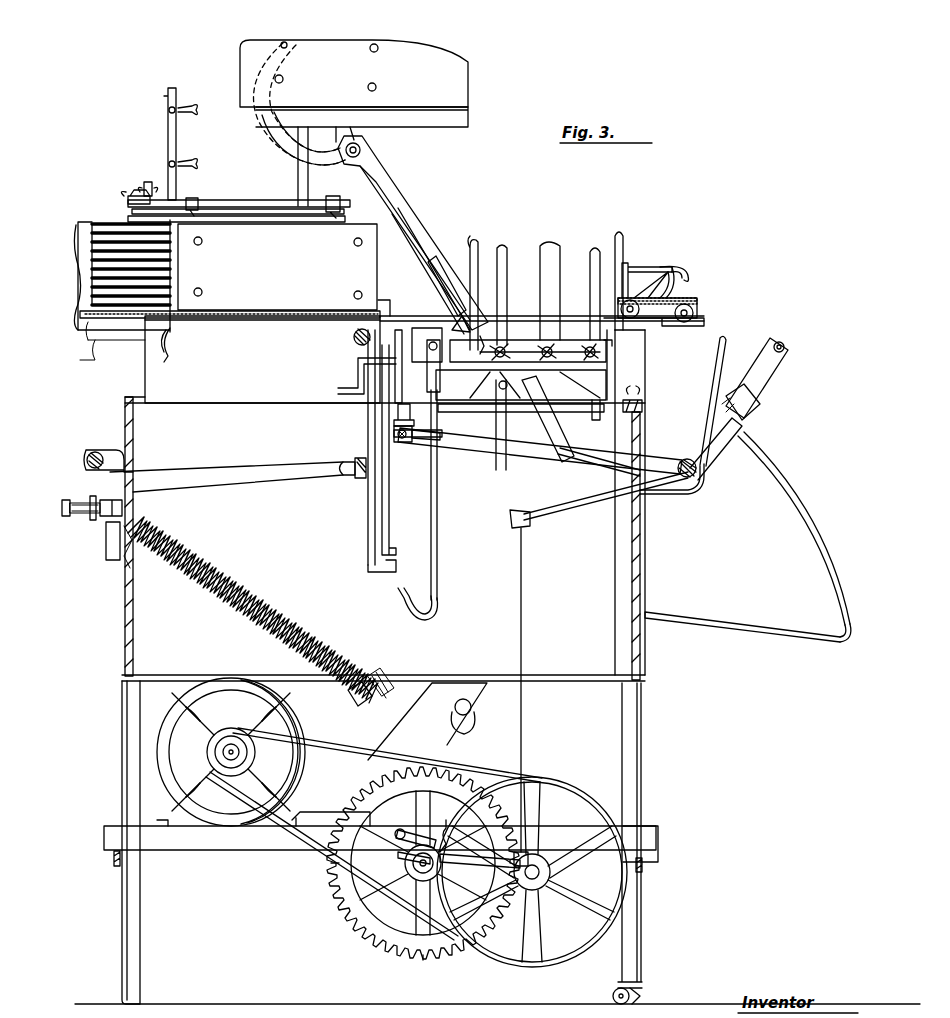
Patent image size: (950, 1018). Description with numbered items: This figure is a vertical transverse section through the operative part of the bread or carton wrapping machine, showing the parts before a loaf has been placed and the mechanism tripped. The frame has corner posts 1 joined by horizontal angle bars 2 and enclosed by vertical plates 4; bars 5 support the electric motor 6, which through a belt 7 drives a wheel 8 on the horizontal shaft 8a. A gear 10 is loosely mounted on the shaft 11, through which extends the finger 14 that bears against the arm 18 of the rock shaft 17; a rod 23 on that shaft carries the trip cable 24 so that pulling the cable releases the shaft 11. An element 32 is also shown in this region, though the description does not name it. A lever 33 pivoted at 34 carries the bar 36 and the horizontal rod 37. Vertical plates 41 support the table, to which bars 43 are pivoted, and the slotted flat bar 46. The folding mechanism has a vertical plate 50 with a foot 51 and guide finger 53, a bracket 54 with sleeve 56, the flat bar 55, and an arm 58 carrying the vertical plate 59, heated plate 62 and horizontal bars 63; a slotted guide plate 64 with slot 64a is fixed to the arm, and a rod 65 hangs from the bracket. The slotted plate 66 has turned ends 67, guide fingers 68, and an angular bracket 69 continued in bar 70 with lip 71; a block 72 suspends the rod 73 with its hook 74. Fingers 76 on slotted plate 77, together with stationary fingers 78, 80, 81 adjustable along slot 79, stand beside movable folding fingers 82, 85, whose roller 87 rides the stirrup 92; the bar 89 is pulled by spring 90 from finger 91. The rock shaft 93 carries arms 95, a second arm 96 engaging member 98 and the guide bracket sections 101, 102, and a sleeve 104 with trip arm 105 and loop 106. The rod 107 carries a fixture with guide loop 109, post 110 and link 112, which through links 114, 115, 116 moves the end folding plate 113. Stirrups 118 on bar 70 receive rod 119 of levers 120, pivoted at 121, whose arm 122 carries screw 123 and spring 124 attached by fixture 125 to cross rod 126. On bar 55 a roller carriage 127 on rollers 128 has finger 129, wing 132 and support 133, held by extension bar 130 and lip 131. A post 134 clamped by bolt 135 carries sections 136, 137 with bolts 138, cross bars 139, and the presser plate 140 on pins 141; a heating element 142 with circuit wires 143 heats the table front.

The corner post 1 is at (128, 770).
The horizontal angle bar 2 is at (124, 400).
The vertical plate 4 is at (134, 468).
The bar 5 is at (282, 850).
The electric motor 6 is at (290, 726).
The belt 7 is at (368, 716).
The wheel 8 is at (522, 964).
The horizontal shaft 8a is at (557, 877).
The gear 10 is at (372, 942).
The horizontal shaft 11 is at (412, 866).
The finger 14 is at (458, 858).
The rock shaft 17 is at (396, 838).
The arm 18 is at (398, 858).
The rod 23 is at (446, 830).
The trip cable 24 is at (522, 624).
The gear rim 32 is at (346, 802).
The lever 33 is at (458, 734).
The pivot 34 is at (472, 710).
The bar 36 is at (768, 364).
The horizontal rod 37 is at (786, 346).
The vertical plate 41 is at (268, 402).
The bar 43 is at (126, 334).
The flat bar 46 is at (128, 194).
The vertical plate 50 is at (646, 362).
The foot 51 is at (644, 400).
The guide finger 53 is at (616, 462).
The bracket 54 is at (378, 296).
The flat horizontal bar 55 is at (518, 340).
The sleeve 56 is at (354, 336).
The arm 58 is at (292, 245).
The vertical plate 59 is at (86, 228).
The heated plate 62 is at (312, 308).
The horizontal bar 63 is at (114, 250).
The guide plate 64 is at (446, 260).
The longitudinal slot 64a is at (424, 248).
The rod 65 is at (386, 516).
The plate 66 is at (566, 340).
The inwardly turned end 67 is at (412, 330).
The guide finger 68 is at (608, 350).
The angular bracket 69 is at (360, 382).
The bar 70 is at (366, 504).
The lip 71 is at (374, 566).
The block 72 is at (430, 350).
The rod 73 is at (438, 496).
The hook 74 is at (414, 604).
The vertical finger 76 is at (478, 246).
The slotted plate 77 is at (484, 338).
The vertical finger 78 is at (502, 246).
The slot 79 is at (548, 374).
The vertical finger 80 is at (596, 246).
The vertical finger 81 is at (550, 246).
The movable folding finger 82 is at (442, 286).
The folding finger 85 is at (690, 262).
The roller 87 is at (596, 408).
The bar 89 is at (526, 402).
The coiled tension spring 90 is at (448, 400).
The finger 91 is at (412, 414).
The U-shaped stirrup 92 is at (560, 402).
The rock shaft 93 is at (686, 480).
The arm 95 is at (360, 346).
The second arm 96 is at (714, 452).
The member 98 is at (750, 410).
The arc shaped section 101 is at (802, 526).
The section 102 is at (712, 626).
The sleeve 104 is at (682, 460).
The arm 105 is at (606, 506).
The loop 106 is at (712, 370).
The horizontal rod 107 is at (408, 444).
The guide loop 109 is at (444, 440).
The post 110 is at (400, 406).
The link 112 is at (396, 186).
The end folding plate 113 is at (338, 46).
The link 114 is at (294, 190).
The link 115 is at (372, 134).
The link 116 is at (282, 145).
The stirrup 118 is at (338, 476).
The horizontal rod 119 is at (356, 460).
The lever 120 is at (244, 478).
The pivot 121 is at (92, 452).
The arm 122 is at (104, 534).
The adjusting screw 123 is at (128, 510).
The spring 124 is at (244, 604).
The connecting fixture 125 is at (388, 694).
The cross rod 126 is at (358, 700).
The roller carriage 127 is at (692, 300).
The roller 128 is at (634, 318).
The finger 129 is at (626, 250).
The extension bar 130 is at (700, 320).
The lip 131 is at (708, 312).
The wing 132 is at (652, 266).
The support 133 is at (682, 270).
The post 134 is at (168, 134).
The clamping bolt 135 is at (148, 178).
The horizontal section 136 is at (218, 196).
The vertical section 137 is at (188, 128).
The clamping bolt 138 is at (198, 112).
The cross bar 139 is at (192, 204).
The presser plate 140 is at (248, 225).
The pin 141 is at (238, 206).
The heating element 142 is at (236, 320).
The circuit wire 143 is at (172, 338).